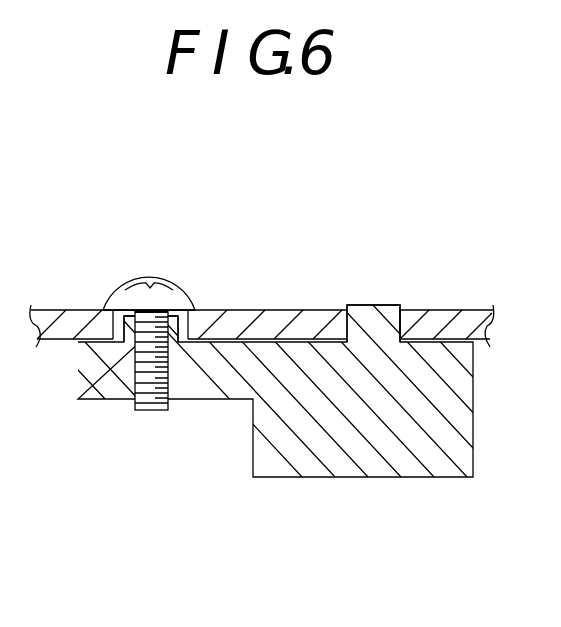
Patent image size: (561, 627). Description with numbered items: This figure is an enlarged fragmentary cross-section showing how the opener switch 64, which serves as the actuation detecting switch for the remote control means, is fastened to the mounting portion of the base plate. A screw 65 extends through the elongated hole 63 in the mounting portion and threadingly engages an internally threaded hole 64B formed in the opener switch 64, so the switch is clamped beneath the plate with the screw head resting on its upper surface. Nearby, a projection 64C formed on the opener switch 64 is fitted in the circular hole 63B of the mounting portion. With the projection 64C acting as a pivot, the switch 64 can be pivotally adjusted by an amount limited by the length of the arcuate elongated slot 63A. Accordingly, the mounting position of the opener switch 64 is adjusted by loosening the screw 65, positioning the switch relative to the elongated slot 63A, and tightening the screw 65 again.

The elongated hole 63 is at (262, 326).
The arcuate elongated hole 63A is at (182, 309).
The circular hole 63B is at (398, 316).
The opener switch 64 is at (355, 503).
The internally threaded hole 64B is at (142, 371).
The projection 64C is at (366, 305).
The screw 65 is at (152, 277).